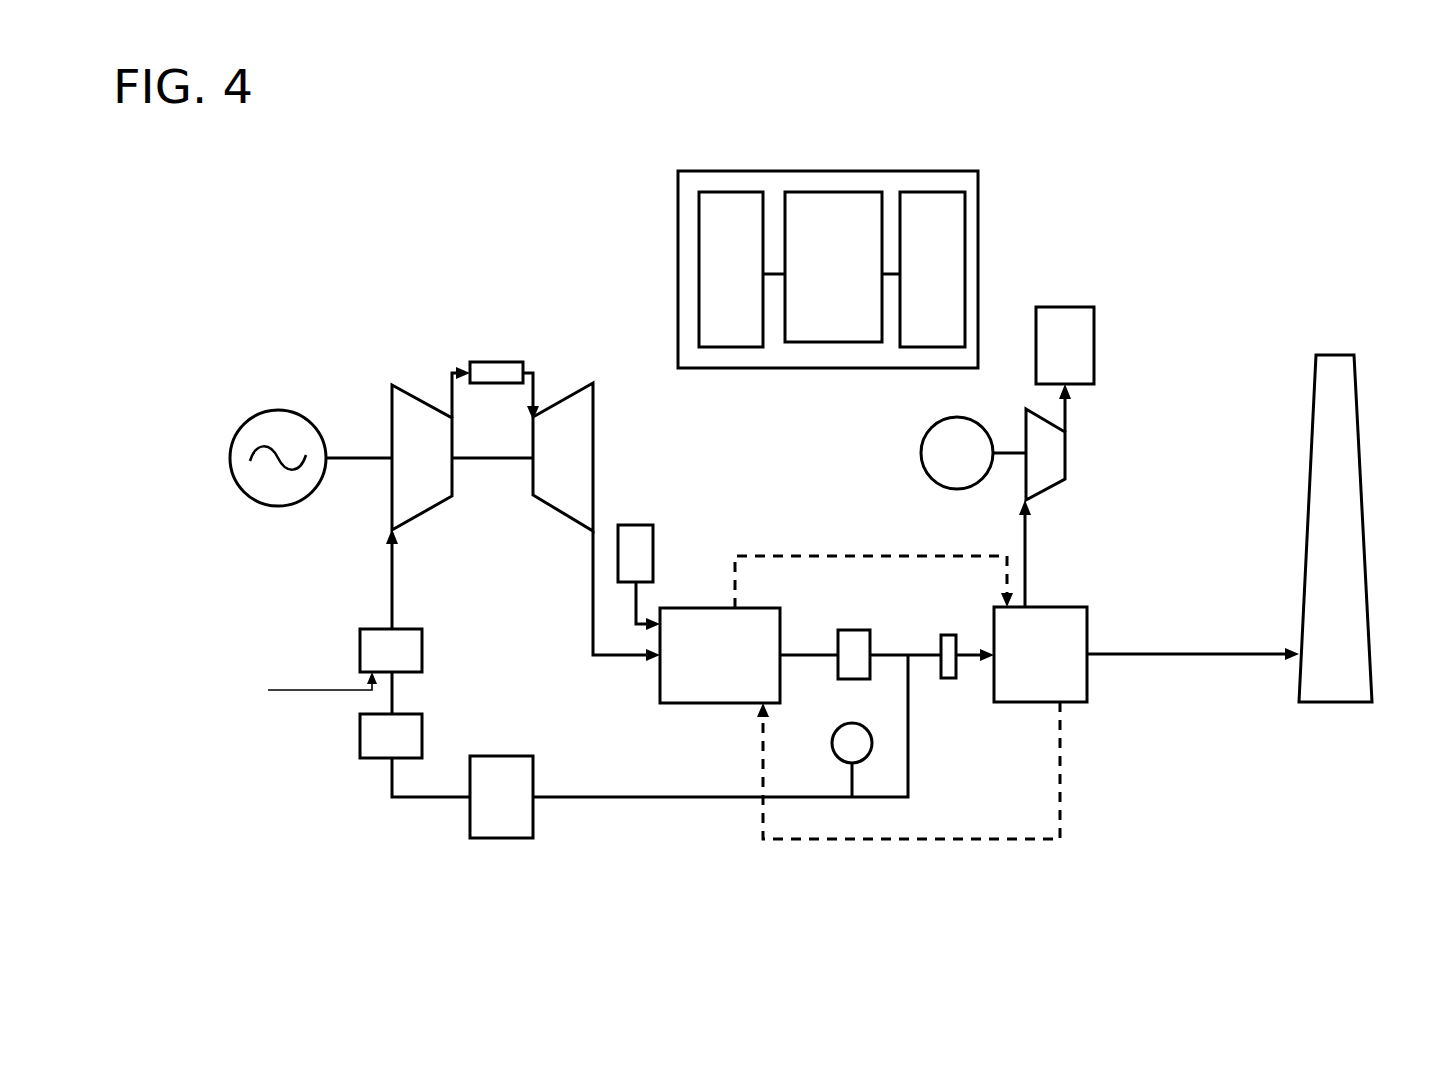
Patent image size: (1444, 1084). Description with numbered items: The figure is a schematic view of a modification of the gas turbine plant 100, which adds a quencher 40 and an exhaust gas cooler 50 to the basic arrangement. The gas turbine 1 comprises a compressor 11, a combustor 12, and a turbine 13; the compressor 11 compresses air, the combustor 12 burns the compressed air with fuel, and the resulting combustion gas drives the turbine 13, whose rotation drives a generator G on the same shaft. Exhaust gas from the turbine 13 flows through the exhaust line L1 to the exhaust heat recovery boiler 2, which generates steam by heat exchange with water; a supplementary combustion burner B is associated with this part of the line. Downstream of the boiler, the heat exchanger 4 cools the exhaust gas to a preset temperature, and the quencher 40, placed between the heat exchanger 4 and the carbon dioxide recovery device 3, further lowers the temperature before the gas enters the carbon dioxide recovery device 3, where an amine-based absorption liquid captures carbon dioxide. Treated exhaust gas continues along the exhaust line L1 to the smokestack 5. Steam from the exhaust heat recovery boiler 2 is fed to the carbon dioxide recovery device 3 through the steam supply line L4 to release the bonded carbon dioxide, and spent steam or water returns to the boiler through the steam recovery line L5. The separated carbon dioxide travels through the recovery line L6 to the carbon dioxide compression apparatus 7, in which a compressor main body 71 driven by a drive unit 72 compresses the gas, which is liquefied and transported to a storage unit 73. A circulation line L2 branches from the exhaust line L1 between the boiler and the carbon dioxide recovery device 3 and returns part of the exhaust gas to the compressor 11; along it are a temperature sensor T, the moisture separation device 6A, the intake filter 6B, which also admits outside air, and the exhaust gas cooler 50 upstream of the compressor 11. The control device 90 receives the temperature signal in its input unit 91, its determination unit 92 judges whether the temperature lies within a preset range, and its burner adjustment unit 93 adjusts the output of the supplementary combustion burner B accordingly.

The gas turbine plant 100 is at (208, 315).
The gas turbine 1 is at (537, 285).
The generator G is at (278, 410).
The compressor 11 is at (428, 402).
The combustor 12 is at (497, 362).
The turbine 13 is at (582, 397).
The supplementary combustion burner B is at (640, 525).
The exhaust line L1 is at (593, 588).
The exhaust heat recovery boiler 2 is at (707, 598).
The carbon dioxide recovery device 3 is at (1095, 600).
The heat exchanger 4 is at (870, 632).
The quencher 40 is at (951, 678).
The smokestack 5 is at (1355, 453).
The moisture separation device 6A is at (360, 733).
The intake filter 6B is at (360, 648).
The exhaust gas cooler 50 is at (490, 838).
The circulation line L2 is at (617, 797).
The steam supply line L4 is at (822, 556).
The steam recovery line L5 is at (862, 839).
The recovery line L6 is at (1025, 537).
The temperature sensor T is at (872, 743).
The carbon dioxide compression apparatus 7 is at (1218, 402).
The compressor main body 71 is at (1065, 452).
The drive unit 72 is at (921, 453).
The storage unit 73 is at (1094, 350).
The control device 90 is at (978, 178).
The input unit 91 is at (699, 242).
The determination unit 92 is at (847, 192).
The burner adjustment unit 93 is at (948, 234).